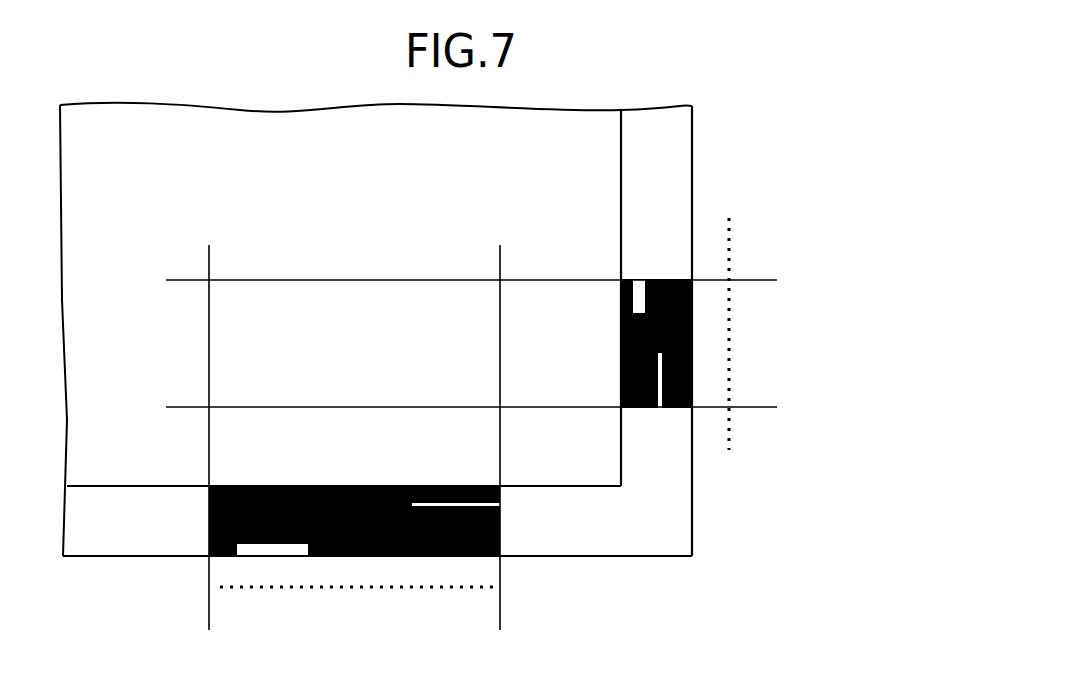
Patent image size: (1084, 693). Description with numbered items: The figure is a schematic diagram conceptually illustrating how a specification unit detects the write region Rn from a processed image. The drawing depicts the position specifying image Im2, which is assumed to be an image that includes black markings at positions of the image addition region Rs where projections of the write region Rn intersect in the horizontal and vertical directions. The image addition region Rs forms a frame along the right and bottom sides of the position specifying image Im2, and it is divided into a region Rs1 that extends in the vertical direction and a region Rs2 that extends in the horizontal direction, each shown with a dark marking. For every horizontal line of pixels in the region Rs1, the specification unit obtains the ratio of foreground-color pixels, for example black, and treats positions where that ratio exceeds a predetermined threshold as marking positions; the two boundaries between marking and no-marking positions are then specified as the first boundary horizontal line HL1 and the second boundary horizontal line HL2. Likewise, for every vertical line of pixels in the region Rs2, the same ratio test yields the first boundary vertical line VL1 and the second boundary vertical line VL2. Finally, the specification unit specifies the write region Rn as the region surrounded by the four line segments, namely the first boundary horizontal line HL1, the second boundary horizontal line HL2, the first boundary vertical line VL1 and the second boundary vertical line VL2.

The position specifying image Im2 is at (763, 169).
The image addition region Rs is at (693, 517).
The region extending in the vertical direction Rs1 is at (632, 195).
The region extending in the horizontal direction Rs2 is at (123, 498).
The write region Rn is at (356, 292).
The first boundary horizontal line HL1 is at (494, 280).
The second boundary horizontal line HL2 is at (494, 408).
The first boundary vertical line VL1 is at (207, 452).
The second boundary vertical line VL2 is at (499, 452).